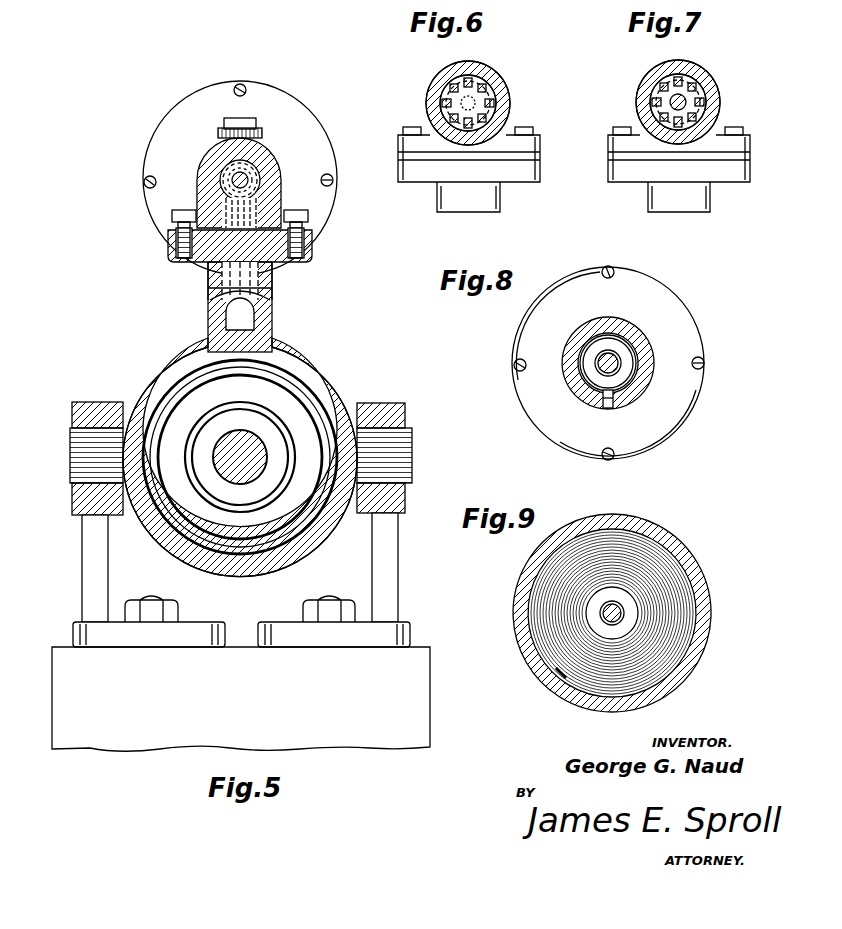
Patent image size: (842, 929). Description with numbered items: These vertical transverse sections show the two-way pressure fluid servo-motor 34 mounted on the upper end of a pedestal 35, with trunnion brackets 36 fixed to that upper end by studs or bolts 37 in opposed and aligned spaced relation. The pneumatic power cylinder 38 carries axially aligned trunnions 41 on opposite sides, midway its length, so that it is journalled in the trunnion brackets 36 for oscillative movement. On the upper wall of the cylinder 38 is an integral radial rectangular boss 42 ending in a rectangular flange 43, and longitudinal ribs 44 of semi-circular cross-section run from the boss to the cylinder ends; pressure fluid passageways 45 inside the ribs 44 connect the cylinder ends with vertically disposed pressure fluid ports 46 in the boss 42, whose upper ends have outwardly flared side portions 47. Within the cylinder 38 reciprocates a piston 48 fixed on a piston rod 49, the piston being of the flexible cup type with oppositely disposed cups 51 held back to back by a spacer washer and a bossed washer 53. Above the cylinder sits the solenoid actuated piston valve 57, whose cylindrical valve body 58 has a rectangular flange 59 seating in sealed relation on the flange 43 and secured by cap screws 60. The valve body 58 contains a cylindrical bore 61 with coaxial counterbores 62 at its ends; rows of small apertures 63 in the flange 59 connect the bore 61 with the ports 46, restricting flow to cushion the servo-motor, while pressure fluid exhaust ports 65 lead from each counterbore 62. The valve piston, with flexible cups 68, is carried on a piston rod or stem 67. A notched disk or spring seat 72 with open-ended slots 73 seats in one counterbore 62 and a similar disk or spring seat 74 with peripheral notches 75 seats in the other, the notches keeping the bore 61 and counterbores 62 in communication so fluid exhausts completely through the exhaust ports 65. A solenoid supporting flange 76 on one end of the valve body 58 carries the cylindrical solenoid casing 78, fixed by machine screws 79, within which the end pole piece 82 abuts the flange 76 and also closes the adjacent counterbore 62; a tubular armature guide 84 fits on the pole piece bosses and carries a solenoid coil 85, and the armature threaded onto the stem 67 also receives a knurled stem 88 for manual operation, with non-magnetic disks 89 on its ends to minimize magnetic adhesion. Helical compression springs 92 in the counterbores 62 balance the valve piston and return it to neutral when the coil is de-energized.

In FIG. 5, the two-way pressure fluid servo-motor 34 is at (130, 322).
In FIG. 5, the pedestal 35 is at (108, 740).
In FIG. 5, the trunnion brackets 36 is at (88, 560).
In FIG. 5, the studs or bolts 37 is at (152, 600).
In FIG. 5, the pneumatic power cylinder 38 is at (332, 374).
In FIG. 5, the trunnions 41 is at (72, 456).
In FIG. 5, the rectangular boss 42 is at (206, 300).
In FIG. 6, the rectangular boss 42 is at (468, 197).
In FIG. 7, the rectangular boss 42 is at (678, 197).
In FIG. 5, the rectangular flange 43 is at (186, 262).
In FIG. 6, the rectangular flange 43 is at (416, 172).
In FIG. 7, the rectangular flange 43 is at (628, 172).
In FIG. 5, the ribs 44 is at (276, 292).
In FIG. 5, the pressure fluid passageways 45 is at (250, 328).
In FIG. 5, the pressure fluid ports 46 is at (208, 282).
In FIG. 5, the outwardly flared side portions 47 is at (282, 276).
In FIG. 5, the piston 48 is at (318, 370).
In FIG. 5, the piston rod 49 is at (226, 450).
In FIG. 5, the cups 51 is at (310, 376).
In FIG. 5, the bossed washer 53 is at (190, 388).
In FIG. 5, the solenoid actuated piston valve 57 is at (144, 131).
In FIG. 5, the cylindrical valve body 58 is at (205, 160).
In FIG. 6, the cylindrical valve body 58 is at (490, 68).
In FIG. 7, the cylindrical valve body 58 is at (700, 70).
In FIG. 8, the cylindrical valve body 58 is at (640, 330).
In FIG. 6, the rectangular flange 59 is at (400, 144).
In FIG. 7, the rectangular flange 59 is at (612, 144).
In FIG. 5, the cap screws 60 is at (178, 212).
In FIG. 6, the cap screws 60 is at (410, 126).
In FIG. 7, the cap screws 60 is at (622, 126).
In FIG. 6, the cylindrical bore 61 is at (440, 98).
In FIG. 7, the cylindrical bore 61 is at (652, 98).
In FIG. 6, the counterbores 62 is at (448, 82).
In FIG. 7, the counterbores 62 is at (656, 80).
In FIG. 8, the counterbores 62 is at (650, 360).
In FIG. 5, the rows of apertures 63 is at (226, 210).
In FIG. 8, the pressure fluid exhaust ports 65 is at (616, 402).
In FIG. 5, the piston rod or stem 67 is at (250, 176).
In FIG. 6, the piston rod or stem 67 is at (492, 96).
In FIG. 7, the piston rod or stem 67 is at (700, 96).
In FIG. 8, the piston rod or stem 67 is at (622, 372).
In FIG. 5, the flexible cups 68 is at (262, 165).
In FIG. 7, the disk or spring seat 72 is at (708, 74).
In FIG. 7, the notches or open-ended slots 73 is at (680, 78).
In FIG. 6, the disk or spring seat 74 is at (500, 70).
In FIG. 6, the peripheral notches or slots 75 is at (468, 78).
In FIG. 5, the solenoid supporting flange 76 is at (200, 102).
In FIG. 8, the solenoid supporting flange 76 is at (564, 432).
In FIG. 9, the cylindrical solenoid casing 78 is at (696, 656).
In FIG. 5, the machine screws 79 is at (248, 88).
In FIG. 8, the machine screws 79 is at (522, 356).
In FIG. 8, the end pole piece 82 is at (612, 348).
In FIG. 9, the tubular armature guide 84 is at (622, 600).
In FIG. 9, the solenoid coil 85 is at (540, 668).
In FIG. 9, the knurled stem 88 is at (650, 598).
In FIG. 9, the non-magnetic disks 89 is at (628, 614).
In FIG. 8, the helical compression springs 92 is at (600, 392).